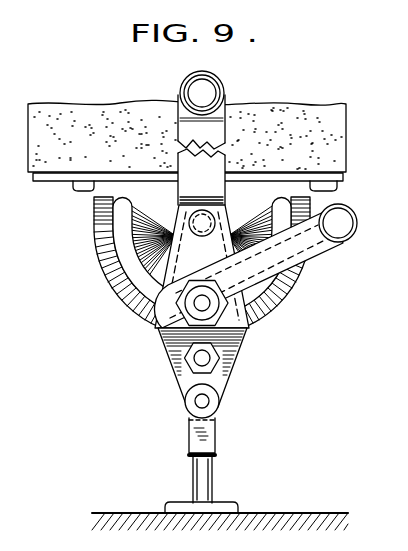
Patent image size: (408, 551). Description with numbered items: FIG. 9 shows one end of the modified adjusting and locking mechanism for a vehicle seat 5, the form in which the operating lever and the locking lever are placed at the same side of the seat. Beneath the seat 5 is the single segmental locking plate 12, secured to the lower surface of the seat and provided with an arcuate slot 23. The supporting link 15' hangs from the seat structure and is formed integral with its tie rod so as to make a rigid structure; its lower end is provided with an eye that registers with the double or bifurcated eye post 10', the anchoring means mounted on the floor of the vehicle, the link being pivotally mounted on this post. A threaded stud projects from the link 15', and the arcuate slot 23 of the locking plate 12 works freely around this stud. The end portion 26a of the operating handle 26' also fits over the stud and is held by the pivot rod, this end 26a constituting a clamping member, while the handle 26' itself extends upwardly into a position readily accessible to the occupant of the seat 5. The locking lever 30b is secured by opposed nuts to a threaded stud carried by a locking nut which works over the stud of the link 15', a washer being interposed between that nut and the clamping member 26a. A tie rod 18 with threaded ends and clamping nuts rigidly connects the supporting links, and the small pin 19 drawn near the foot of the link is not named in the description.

The seat 5 is at (80, 120).
The operating handle or lever 26' is at (232, 138).
The segmental locking plate 12 is at (96, 228).
The arcuate slot 23 is at (133, 257).
The end portion of the handle 26a is at (155, 288).
The locking lever 30b is at (296, 258).
The supporting link 15' is at (173, 367).
The tie rod 18 is at (190, 363).
The pivot pin 19 is at (208, 402).
The double or bifurcated eye post 10' is at (215, 465).